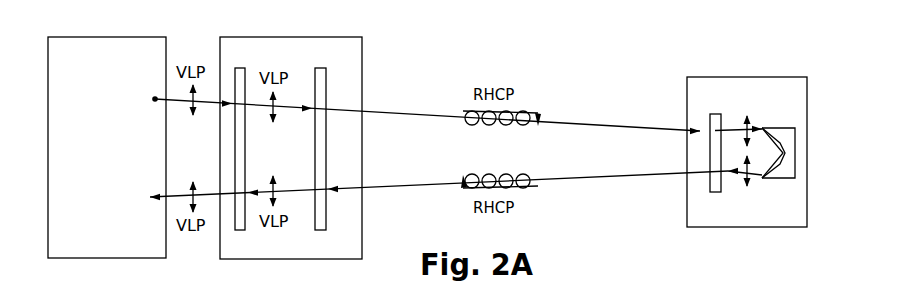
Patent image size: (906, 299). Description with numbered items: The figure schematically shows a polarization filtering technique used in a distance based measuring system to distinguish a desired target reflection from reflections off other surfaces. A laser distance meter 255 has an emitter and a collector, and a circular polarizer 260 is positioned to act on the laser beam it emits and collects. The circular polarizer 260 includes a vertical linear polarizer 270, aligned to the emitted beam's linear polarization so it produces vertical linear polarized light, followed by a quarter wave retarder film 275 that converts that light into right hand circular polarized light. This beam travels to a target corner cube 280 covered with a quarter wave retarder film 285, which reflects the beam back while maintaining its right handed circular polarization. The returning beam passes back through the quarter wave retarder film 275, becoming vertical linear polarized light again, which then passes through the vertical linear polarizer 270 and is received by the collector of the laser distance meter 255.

The laser distance meter 255 is at (126, 250).
The circular polarizer 260 is at (301, 132).
The vertical linear polarizer 270 is at (241, 68).
The quarter wave retarder film 275 is at (322, 68).
The target corner cube 280 is at (747, 140).
The quarter wave retarder film 285 is at (713, 114).